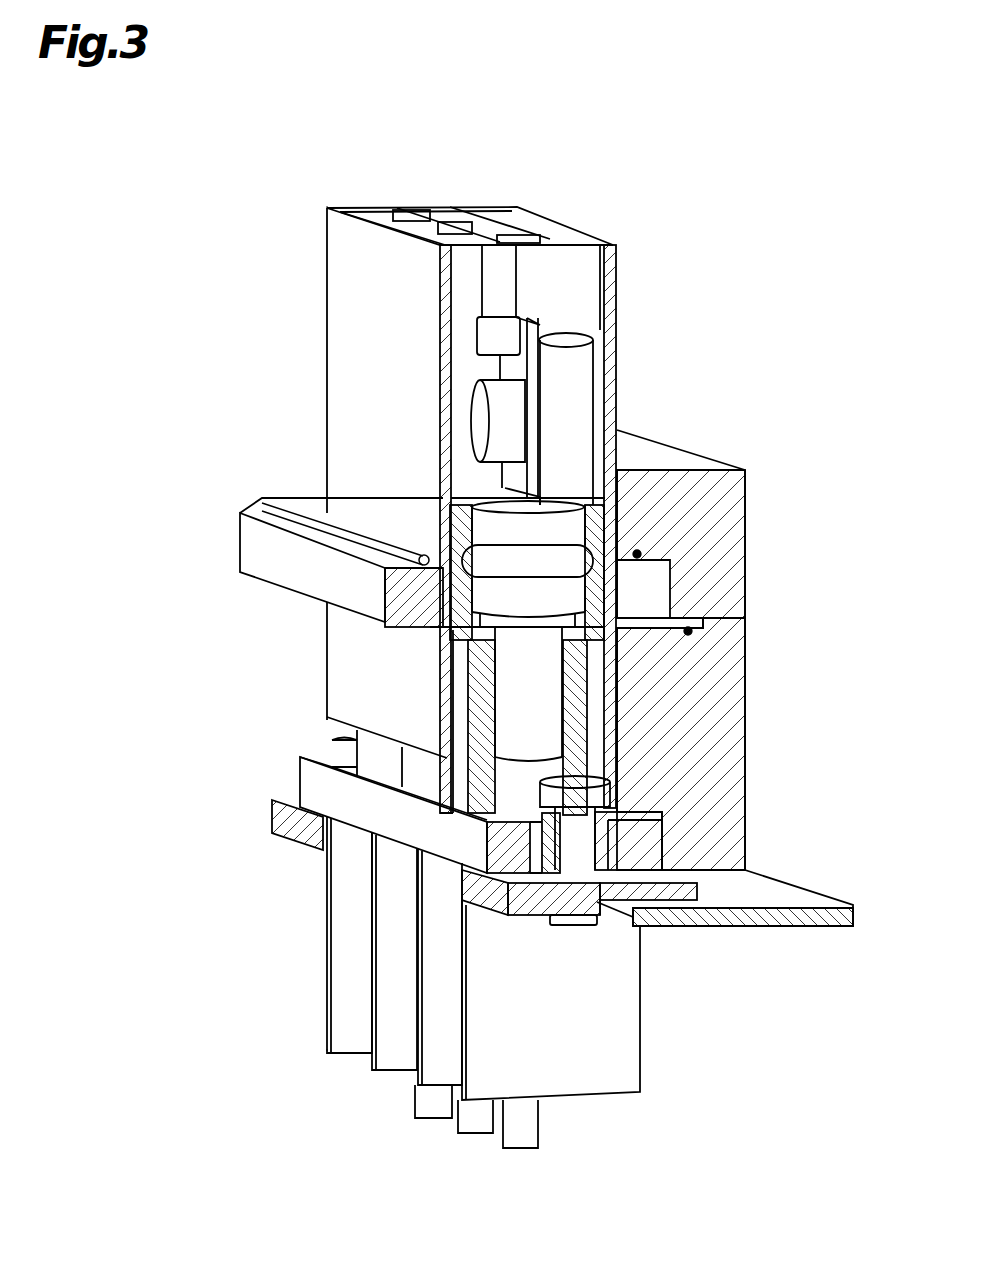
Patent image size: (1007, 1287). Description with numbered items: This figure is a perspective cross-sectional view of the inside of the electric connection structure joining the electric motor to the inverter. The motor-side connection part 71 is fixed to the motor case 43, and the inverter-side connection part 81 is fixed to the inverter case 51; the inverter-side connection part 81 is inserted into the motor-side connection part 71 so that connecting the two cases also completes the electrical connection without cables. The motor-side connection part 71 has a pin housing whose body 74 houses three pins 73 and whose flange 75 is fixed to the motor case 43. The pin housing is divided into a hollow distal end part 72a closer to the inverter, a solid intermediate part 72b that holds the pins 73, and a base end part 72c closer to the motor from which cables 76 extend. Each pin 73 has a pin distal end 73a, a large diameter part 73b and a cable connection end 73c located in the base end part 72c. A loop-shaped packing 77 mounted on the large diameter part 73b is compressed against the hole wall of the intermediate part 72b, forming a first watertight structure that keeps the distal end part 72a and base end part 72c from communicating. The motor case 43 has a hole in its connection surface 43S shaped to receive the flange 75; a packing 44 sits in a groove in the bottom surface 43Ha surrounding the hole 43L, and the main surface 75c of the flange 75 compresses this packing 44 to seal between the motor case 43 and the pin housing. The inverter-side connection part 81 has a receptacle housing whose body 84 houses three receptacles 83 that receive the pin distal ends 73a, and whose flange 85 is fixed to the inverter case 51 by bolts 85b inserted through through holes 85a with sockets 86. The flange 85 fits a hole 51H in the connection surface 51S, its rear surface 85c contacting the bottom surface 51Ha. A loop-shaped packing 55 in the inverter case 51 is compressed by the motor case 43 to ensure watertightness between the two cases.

The motor-side connection part 71 is at (283, 228).
The body 74 is at (327, 302).
The intermediate part 72b is at (460, 498).
The base end part 72c is at (612, 250).
The distal end part 72a is at (455, 672).
The cables 76 is at (410, 210).
The pins 73 is at (548, 312).
The large diameter part 73b is at (440, 530).
The cable connection end 73c is at (572, 335).
The packing 77 is at (425, 560).
The flange 75 is at (240, 540).
The receptacles 83 is at (475, 700).
The pin distal end 73a is at (575, 790).
The motor case 43 is at (745, 540).
The hole 43L is at (618, 460).
The packing 44 is at (640, 550).
The main surface 75c is at (668, 560).
The bottom surface 43Ha is at (660, 600).
The connection surface 51S is at (735, 628).
The connection surface 43S is at (720, 618).
The packing 55 is at (692, 634).
The inverter case 51 is at (745, 735).
The hole 51H is at (620, 758).
The bolts 85b is at (655, 830).
The bottom surface 51Ha is at (715, 910).
The flange 85 is at (300, 782).
The rear surface 85c is at (285, 836).
The through holes 85a is at (612, 905).
The body 84 is at (327, 990).
The sockets 86 is at (612, 885).
The inverter-side connection part 81 is at (290, 1030).